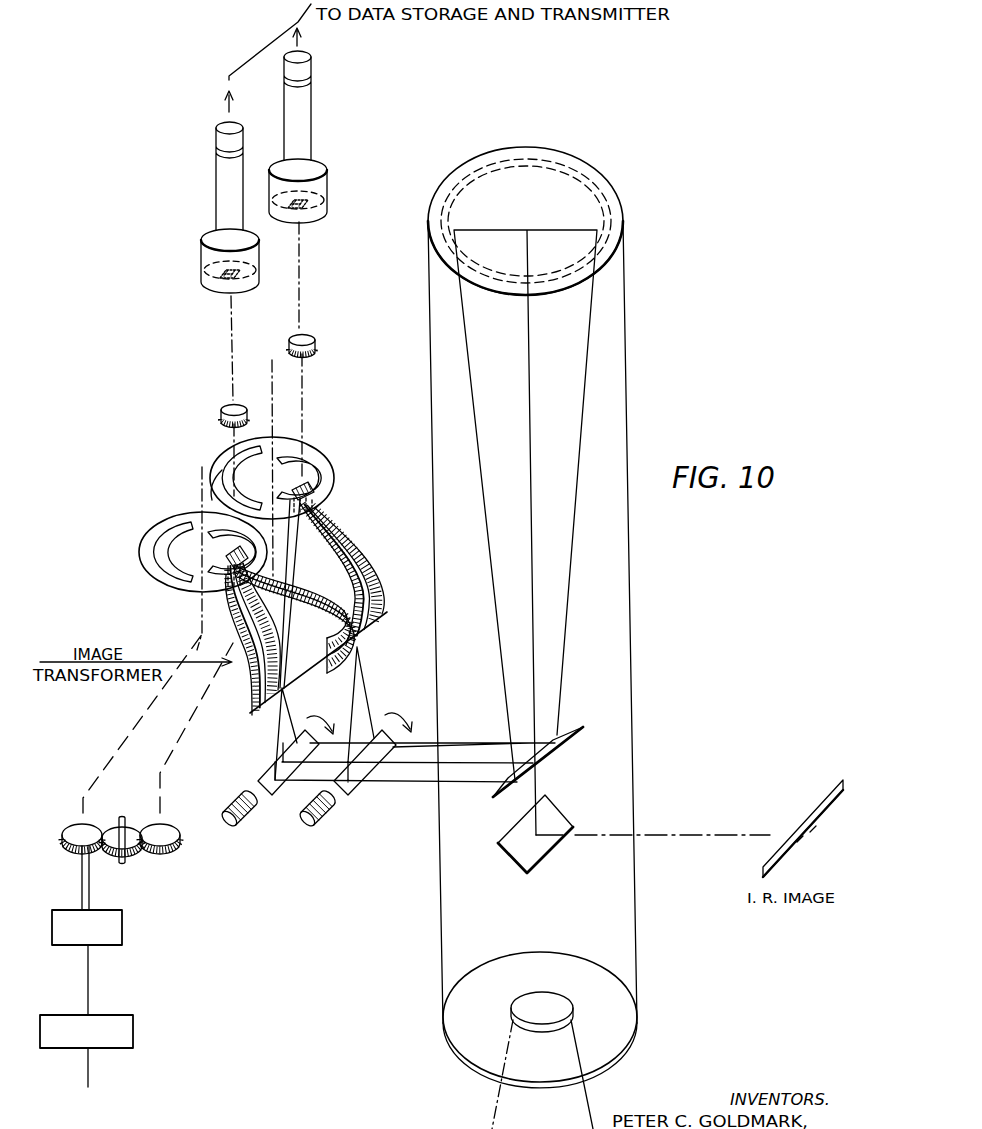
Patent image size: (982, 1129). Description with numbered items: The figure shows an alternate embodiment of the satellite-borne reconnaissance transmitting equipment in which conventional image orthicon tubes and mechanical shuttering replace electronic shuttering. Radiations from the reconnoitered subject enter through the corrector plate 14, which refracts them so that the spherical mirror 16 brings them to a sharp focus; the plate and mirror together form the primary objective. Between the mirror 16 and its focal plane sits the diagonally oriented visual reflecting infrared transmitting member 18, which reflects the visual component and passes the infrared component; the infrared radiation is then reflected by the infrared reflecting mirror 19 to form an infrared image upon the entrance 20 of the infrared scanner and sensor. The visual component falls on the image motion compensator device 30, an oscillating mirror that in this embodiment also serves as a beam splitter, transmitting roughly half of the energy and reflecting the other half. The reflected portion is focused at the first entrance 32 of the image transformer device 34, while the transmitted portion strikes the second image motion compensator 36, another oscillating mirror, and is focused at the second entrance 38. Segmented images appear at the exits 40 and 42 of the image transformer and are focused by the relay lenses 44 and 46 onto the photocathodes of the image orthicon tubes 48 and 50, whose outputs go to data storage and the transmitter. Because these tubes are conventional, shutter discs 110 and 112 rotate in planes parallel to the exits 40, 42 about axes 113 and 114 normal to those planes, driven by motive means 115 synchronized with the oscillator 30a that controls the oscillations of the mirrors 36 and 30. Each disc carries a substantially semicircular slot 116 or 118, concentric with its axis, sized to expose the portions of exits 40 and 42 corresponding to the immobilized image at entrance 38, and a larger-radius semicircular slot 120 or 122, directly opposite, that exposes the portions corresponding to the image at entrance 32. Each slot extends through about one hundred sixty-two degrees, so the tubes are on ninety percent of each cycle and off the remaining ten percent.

The corrector plate 14 is at (553, 1008).
The spherical mirror 16 is at (598, 185).
The visual reflecting infrared transmitting member 18 is at (560, 755).
The infrared reflecting mirror 19 is at (538, 858).
The entrance of infrared scanner and sensor 20 is at (772, 863).
The image motion compensator device 30 is at (350, 790).
The oscillator 30a is at (125, 1015).
The first entrance of image transformer device 32 is at (368, 636).
The image transformer device 34 is at (365, 546).
The second image motion compensator 36 is at (256, 779).
The second entrance of image transformer device 38 is at (258, 714).
The exit of image transformer 40 is at (310, 490).
The exit of image transformer 42 is at (216, 576).
The relay lens 44 is at (315, 349).
The relay lens 46 is at (220, 411).
The image orthicon tube 48 is at (327, 180).
The image orthicon tube 50 is at (206, 235).
The shutter disc 110 is at (328, 463).
The shutter disc 112 is at (140, 551).
The axis 113 is at (270, 392).
The axis 114 is at (202, 492).
The motive means 115 is at (120, 911).
The semicircular slot 116 is at (294, 461).
The semicircular slot 118 is at (210, 552).
The semicircular slot 120 is at (232, 466).
The semicircular slot 122 is at (165, 532).